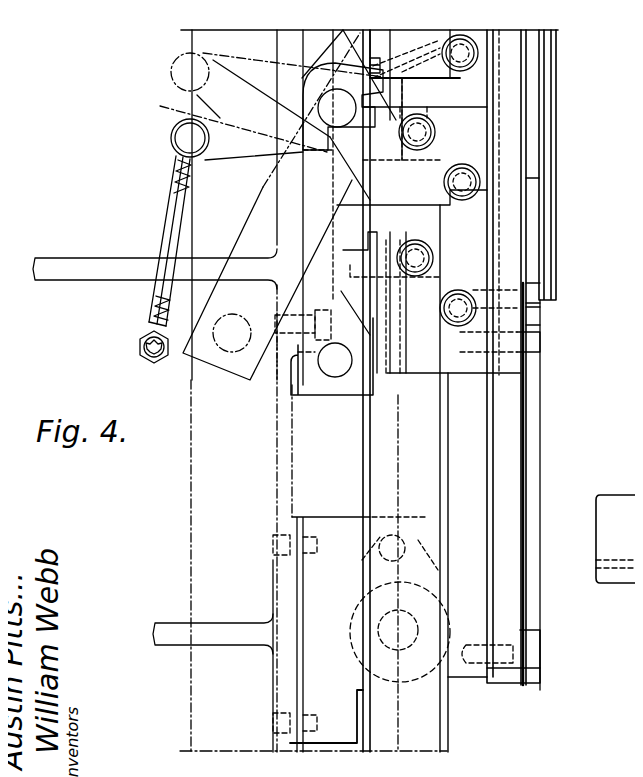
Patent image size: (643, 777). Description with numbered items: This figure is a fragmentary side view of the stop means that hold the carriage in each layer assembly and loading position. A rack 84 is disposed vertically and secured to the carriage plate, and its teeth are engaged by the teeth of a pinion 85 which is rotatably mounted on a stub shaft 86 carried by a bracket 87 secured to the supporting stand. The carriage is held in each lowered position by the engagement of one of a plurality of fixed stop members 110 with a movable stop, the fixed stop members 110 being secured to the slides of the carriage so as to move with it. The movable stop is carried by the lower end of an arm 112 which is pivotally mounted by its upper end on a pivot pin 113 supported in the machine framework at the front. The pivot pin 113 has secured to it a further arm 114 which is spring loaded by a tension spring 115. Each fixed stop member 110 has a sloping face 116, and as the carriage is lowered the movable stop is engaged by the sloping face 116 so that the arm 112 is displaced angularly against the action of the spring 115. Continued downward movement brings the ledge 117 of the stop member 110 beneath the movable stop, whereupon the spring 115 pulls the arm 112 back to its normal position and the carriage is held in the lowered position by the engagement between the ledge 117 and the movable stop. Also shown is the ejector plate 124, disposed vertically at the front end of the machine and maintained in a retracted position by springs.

The rack 84 is at (447, 454).
The pinion 85 is at (387, 692).
The stub shaft 86 is at (452, 635).
The bracket 87 is at (347, 699).
The fixed stop member 110 is at (424, 377).
The arm 112 is at (338, 397).
The pivot pin 113 is at (343, 131).
The arm 114 is at (200, 113).
The tension spring 115 is at (162, 230).
The sloping face 116 is at (340, 292).
The ledge 117 is at (318, 194).
The ejector plate 124 is at (553, 171).